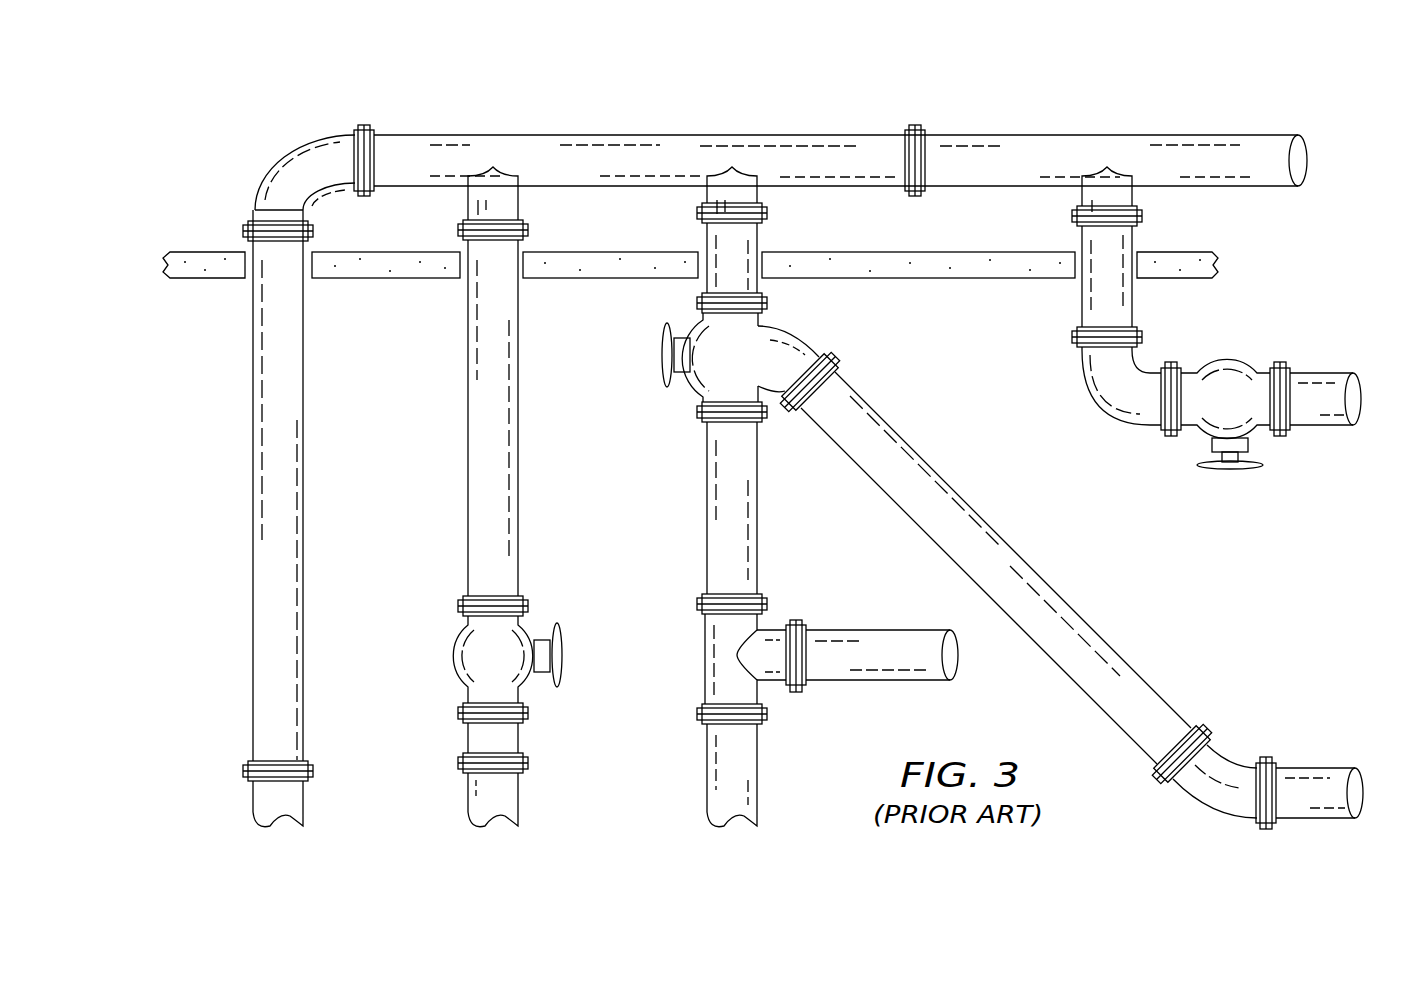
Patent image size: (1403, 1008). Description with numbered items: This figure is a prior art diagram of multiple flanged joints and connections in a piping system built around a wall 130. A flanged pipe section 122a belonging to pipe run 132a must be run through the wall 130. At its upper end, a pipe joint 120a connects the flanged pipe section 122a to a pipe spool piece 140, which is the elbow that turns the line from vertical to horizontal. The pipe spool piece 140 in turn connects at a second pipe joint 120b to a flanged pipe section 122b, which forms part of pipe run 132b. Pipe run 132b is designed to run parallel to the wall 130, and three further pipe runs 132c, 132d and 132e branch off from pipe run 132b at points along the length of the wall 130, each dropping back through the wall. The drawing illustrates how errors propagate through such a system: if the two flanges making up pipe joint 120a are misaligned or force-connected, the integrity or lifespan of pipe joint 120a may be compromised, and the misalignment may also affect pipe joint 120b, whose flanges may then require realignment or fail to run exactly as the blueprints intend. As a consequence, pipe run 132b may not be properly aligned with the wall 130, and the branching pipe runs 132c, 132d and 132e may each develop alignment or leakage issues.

The wall 130 is at (1222, 263).
The pipe spool piece 140 is at (303, 157).
The pipe joint 120a is at (237, 211).
The pipe joint 120b is at (375, 126).
The flanged pipe section 122a is at (293, 325).
The flanged pipe section 122b is at (488, 148).
The pipe run 132a is at (262, 500).
The pipe run 132b is at (826, 120).
The pipe run 132c is at (422, 291).
The pipe run 132d is at (639, 753).
The pipe run 132e is at (1183, 452).